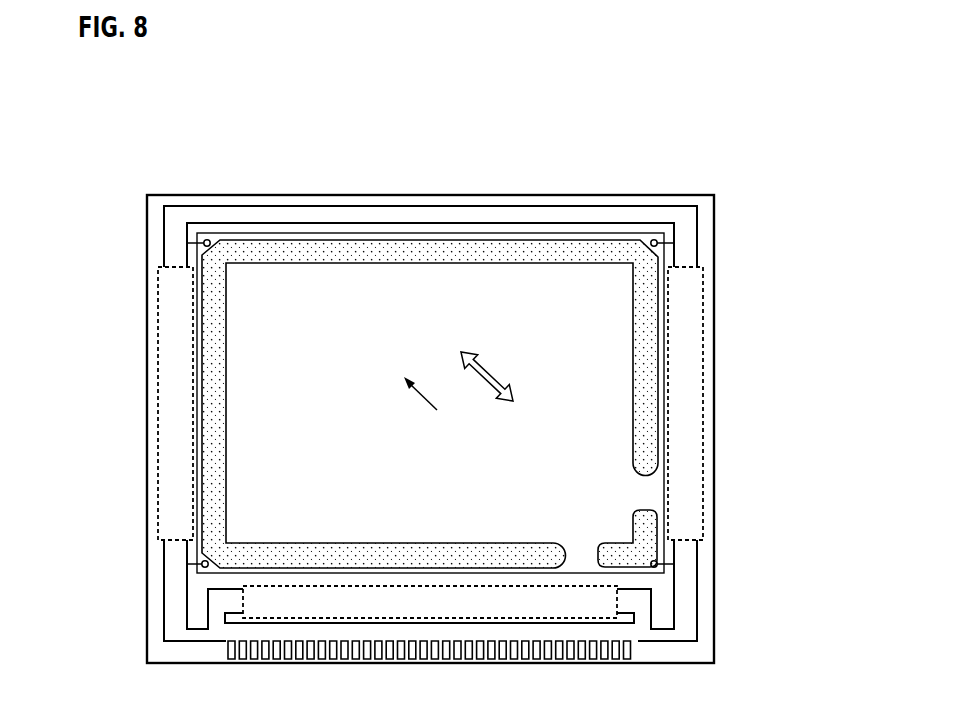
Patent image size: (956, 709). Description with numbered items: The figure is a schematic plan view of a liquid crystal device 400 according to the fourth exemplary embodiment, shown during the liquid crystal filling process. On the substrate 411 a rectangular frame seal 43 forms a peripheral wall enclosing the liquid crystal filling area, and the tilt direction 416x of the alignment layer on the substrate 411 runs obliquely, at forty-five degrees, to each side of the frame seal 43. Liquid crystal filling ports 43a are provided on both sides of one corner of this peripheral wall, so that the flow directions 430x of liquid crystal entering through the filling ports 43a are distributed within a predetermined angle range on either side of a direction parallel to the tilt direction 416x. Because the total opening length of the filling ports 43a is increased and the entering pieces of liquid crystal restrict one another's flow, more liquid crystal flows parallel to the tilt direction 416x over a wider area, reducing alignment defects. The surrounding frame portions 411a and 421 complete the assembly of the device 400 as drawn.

The liquid crystal device 400 is at (455, 140).
The substrate 411 is at (202, 195).
The inner frame portion 411a is at (643, 206).
The light guide plate / panel frame 421 is at (480, 240).
The rectangular frame seal 43 is at (287, 240).
The liquid crystal filling port 43a is at (580, 545).
The tilt direction 416x is at (490, 372).
The flow direction 430x is at (420, 397).